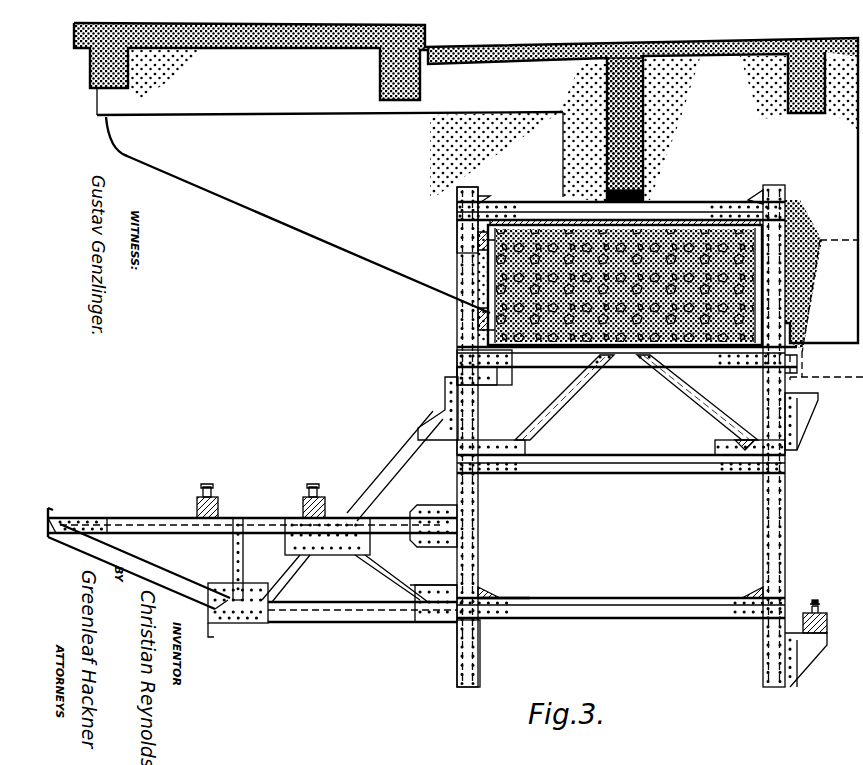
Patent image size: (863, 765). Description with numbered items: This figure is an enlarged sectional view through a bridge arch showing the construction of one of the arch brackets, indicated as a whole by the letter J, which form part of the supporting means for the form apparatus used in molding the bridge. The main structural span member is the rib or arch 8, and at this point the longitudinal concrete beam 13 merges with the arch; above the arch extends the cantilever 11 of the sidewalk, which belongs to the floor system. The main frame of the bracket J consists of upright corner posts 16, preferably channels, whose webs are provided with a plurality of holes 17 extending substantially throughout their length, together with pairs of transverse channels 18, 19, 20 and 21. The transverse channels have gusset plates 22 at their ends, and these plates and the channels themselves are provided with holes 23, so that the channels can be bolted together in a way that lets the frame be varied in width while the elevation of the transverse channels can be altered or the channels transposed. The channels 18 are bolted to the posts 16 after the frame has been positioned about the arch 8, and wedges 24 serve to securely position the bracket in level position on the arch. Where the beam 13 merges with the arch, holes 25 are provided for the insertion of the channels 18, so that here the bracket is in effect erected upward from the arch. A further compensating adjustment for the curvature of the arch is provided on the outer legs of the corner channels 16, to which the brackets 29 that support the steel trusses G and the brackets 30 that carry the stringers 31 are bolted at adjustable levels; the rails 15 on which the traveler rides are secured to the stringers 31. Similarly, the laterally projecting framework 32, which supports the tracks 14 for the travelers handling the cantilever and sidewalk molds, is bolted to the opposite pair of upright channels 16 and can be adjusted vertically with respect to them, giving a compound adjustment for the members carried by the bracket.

The cantilever 11 is at (466, 186).
The longitudinal concrete beam 13 is at (645, 146).
The hole 25 is at (650, 196).
The transverse channel 18 is at (697, 212).
The rib or arch 8 is at (765, 229).
The wedge 24 is at (501, 200).
The arch bracket J is at (610, 366).
The upright corner post 16 is at (482, 549).
The transverse channel 19 is at (630, 360).
The transverse channel 20 is at (588, 464).
The transverse channel 21 is at (620, 612).
The gusset plate 22 is at (735, 450).
The hole 23 is at (520, 600).
The hole 17 is at (470, 668).
The bracket 29 is at (800, 428).
The steel truss G is at (849, 378).
The bracket 30 is at (805, 681).
The stringer 31 is at (828, 634).
The rail 15 is at (819, 608).
The laterally projecting framework 32 is at (303, 607).
The track 14 is at (312, 487).